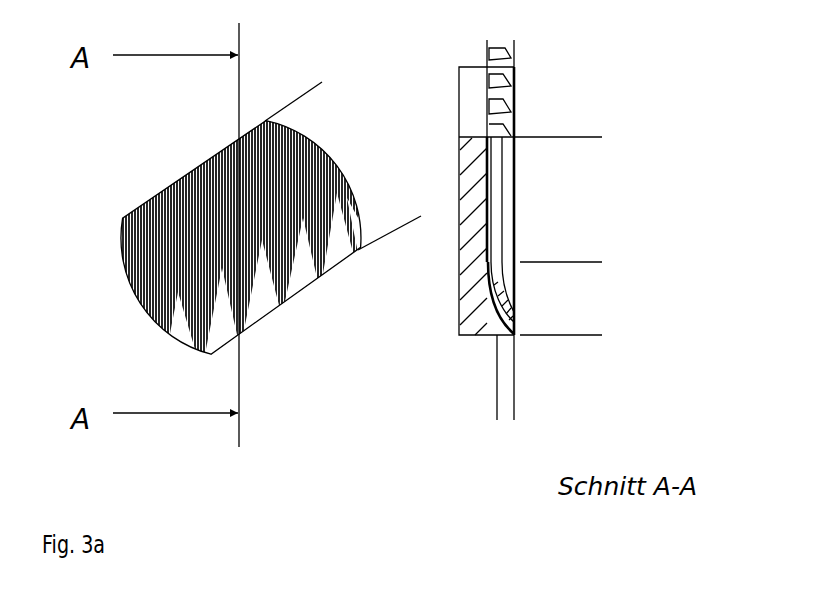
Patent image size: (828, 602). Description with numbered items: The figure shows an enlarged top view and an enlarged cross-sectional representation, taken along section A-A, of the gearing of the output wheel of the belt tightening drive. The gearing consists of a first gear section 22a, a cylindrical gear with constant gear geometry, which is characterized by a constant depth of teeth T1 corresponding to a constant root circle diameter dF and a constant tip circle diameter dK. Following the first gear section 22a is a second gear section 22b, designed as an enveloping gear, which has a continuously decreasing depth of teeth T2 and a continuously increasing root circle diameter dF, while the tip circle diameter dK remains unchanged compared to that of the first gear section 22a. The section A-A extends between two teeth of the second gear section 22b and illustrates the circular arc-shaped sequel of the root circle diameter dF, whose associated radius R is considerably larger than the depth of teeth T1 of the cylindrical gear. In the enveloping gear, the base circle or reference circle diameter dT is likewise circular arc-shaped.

The first gear section 22a is at (596, 262).
The second gear section 22b is at (596, 353).
The depth of teeth T1 is at (470, 52).
The depth of teeth T2 is at (473, 408).
The radius R is at (500, 301).
The reference circle diameter dT is at (381, 252).
The root circle diameter dF is at (370, 283).
The tip circle diameter dK is at (366, 318).